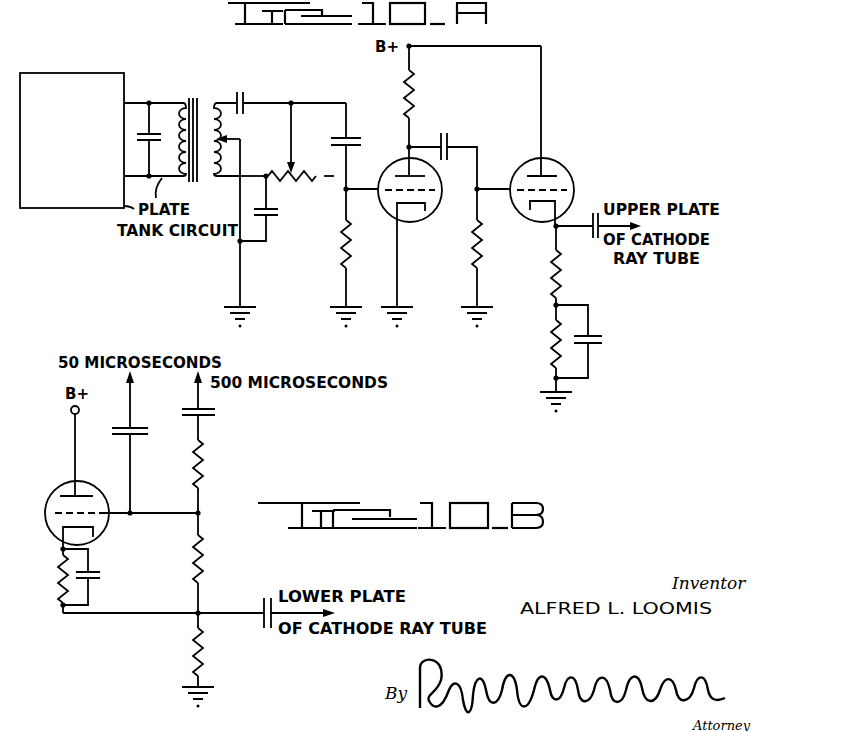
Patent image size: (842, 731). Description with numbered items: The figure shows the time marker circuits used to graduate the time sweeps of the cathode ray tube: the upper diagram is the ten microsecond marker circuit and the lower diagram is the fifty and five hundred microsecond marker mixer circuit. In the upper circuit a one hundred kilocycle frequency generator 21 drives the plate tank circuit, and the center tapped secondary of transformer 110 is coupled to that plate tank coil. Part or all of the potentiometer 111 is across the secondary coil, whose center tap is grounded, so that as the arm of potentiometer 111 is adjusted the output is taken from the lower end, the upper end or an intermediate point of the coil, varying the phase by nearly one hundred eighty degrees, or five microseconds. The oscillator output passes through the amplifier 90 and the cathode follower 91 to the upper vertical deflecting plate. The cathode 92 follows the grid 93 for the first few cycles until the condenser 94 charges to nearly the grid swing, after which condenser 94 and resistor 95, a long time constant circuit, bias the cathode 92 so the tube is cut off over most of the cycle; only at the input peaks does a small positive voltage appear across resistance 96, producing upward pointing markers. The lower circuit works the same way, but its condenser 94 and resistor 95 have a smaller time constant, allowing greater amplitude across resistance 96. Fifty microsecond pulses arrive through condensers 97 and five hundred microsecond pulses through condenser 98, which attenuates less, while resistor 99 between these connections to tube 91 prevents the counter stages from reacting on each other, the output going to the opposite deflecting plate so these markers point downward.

In FIG. 10A, the 100 K.C. frequency generator 21 is at (87, 74).
In FIG. 10A, the transformer 110 is at (189, 102).
In FIG. 10A, the potentiometer 111 is at (289, 180).
In FIG. 10A, the amplifier 90 is at (384, 173).
In FIG. 10A, the cathode follower 91 is at (545, 144).
In FIG. 10B, the cathode follower 91 is at (57, 483).
In FIG. 10A, the cathode 92 is at (540, 221).
In FIG. 10A, the grid 93 is at (494, 185).
In FIG. 10A, the condenser 94 is at (598, 338).
In FIG. 10B, the condenser 94 is at (103, 575).
In FIG. 10A, the resistor 95 is at (549, 350).
In FIG. 10B, the resistor 95 is at (58, 590).
In FIG. 10A, the resistance 96 is at (561, 283).
In FIG. 10B, the resistance 96 is at (205, 661).
In FIG. 10B, the condensers 97 is at (149, 431).
In FIG. 10B, the condenser 98 is at (216, 412).
In FIG. 10B, the resistor 99 is at (204, 487).